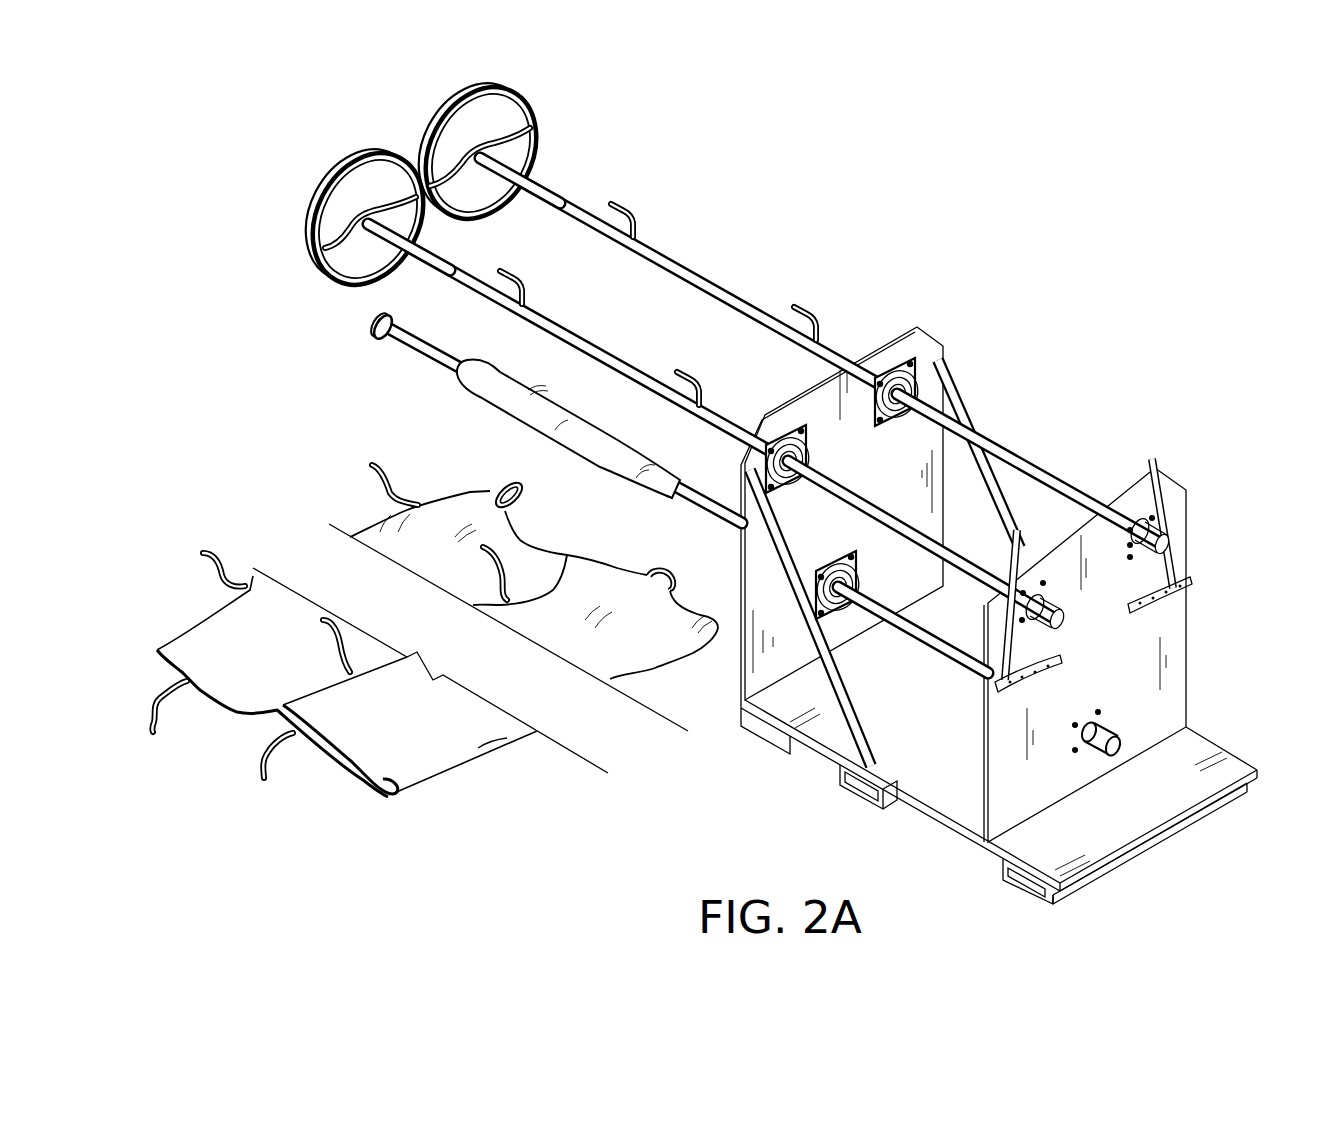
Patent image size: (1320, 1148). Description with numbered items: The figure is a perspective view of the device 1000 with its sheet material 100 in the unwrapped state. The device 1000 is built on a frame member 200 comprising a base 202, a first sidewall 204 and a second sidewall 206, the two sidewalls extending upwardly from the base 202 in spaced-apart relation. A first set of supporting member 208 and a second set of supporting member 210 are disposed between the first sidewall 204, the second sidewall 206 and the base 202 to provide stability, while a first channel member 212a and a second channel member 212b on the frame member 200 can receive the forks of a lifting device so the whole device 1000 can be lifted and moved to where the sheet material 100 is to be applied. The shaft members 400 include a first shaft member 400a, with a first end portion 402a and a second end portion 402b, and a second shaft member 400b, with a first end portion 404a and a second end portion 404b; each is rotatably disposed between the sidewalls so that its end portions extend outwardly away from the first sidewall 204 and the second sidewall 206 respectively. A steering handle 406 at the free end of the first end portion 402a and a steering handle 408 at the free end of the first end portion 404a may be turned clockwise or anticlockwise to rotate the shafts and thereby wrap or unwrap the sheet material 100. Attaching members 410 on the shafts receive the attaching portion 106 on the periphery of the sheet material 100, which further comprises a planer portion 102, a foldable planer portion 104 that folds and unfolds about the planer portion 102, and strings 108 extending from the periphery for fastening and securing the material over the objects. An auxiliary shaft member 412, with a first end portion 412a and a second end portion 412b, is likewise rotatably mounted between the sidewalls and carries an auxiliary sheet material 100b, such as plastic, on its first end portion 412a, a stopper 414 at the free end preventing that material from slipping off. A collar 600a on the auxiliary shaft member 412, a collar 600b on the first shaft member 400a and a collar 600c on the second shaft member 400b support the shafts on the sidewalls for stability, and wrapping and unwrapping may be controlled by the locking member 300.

The device 1000 is at (709, 484).
The sheet material 100 is at (432, 595).
The auxiliary sheet material 100b is at (644, 470).
The planer portion 102 is at (226, 629).
The foldable planer portion 104 is at (413, 768).
The attaching portion 106 is at (513, 481).
The strings 108 is at (372, 464).
The frame member 200 is at (985, 585).
The base 202 is at (930, 800).
The first sidewall 204 is at (930, 386).
The second sidewall 206 is at (1173, 670).
The first set of supporting member 208 is at (808, 674).
The second set of supporting member 210 is at (968, 405).
The first channel member 212a is at (843, 788).
The second channel member 212b is at (1003, 866).
The locking member 300 is at (1177, 535).
The shaft members 400 is at (416, 183).
The first shaft member 400a is at (346, 201).
The second shaft member 400b is at (486, 150).
The first end portion 402a is at (590, 342).
The second end portion 402b is at (867, 506).
The first end portion 404a is at (700, 277).
The second end portion 404b is at (1050, 481).
The steering handle 406 is at (318, 234).
The steering handle 408 is at (535, 119).
The attaching members 410 is at (630, 206).
The auxiliary shaft member 412 is at (527, 415).
The first end portion 412a is at (430, 350).
The second end portion 412b is at (1104, 745).
The stopper 414 is at (376, 326).
The collar 600a is at (832, 570).
The collar 600b is at (775, 440).
The collar 600c is at (890, 372).